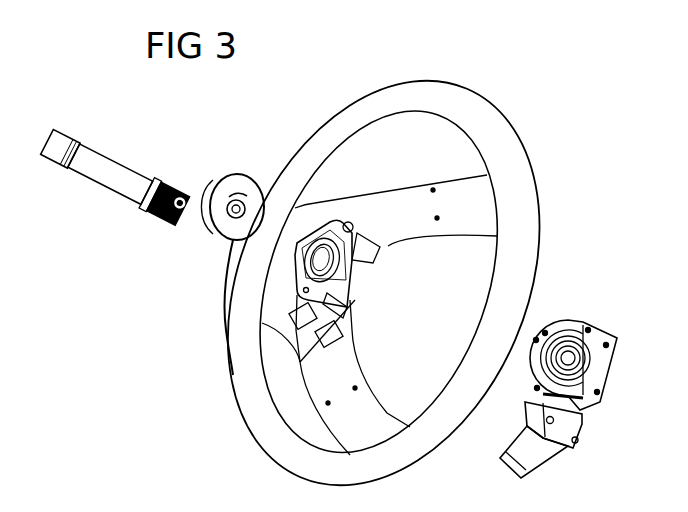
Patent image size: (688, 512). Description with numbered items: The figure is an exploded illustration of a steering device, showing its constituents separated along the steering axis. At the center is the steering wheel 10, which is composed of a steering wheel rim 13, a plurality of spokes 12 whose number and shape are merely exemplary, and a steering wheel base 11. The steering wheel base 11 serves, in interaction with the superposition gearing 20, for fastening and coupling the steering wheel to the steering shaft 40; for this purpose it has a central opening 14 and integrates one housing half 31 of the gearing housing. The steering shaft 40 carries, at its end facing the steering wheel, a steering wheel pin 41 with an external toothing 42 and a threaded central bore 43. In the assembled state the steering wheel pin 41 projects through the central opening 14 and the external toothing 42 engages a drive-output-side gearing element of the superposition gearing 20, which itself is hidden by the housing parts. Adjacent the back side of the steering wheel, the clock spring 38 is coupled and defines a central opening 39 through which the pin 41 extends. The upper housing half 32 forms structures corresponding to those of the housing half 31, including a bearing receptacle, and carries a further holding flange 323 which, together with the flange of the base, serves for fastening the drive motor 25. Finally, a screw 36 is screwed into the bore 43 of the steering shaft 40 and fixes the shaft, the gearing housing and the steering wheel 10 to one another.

The steering wheel 10 is at (384, 272).
The steering wheel base 11 is at (364, 240).
The spokes 12 is at (461, 217).
The steering wheel rim 13 is at (530, 222).
The central opening 14 is at (350, 222).
The superposition gearing 20 is at (589, 379).
The drive motor 25 is at (548, 461).
The housing half 31 is at (372, 222).
The upper housing half 32 is at (604, 357).
The holding flange 323 is at (573, 434).
The screw 36 is at (574, 355).
The clock spring 38 is at (223, 245).
The central opening 39 is at (236, 219).
The steering shaft 40 is at (68, 133).
The steering wheel pin 41 is at (113, 167).
The external toothing 42 is at (173, 187).
The central bore 43 is at (180, 217).